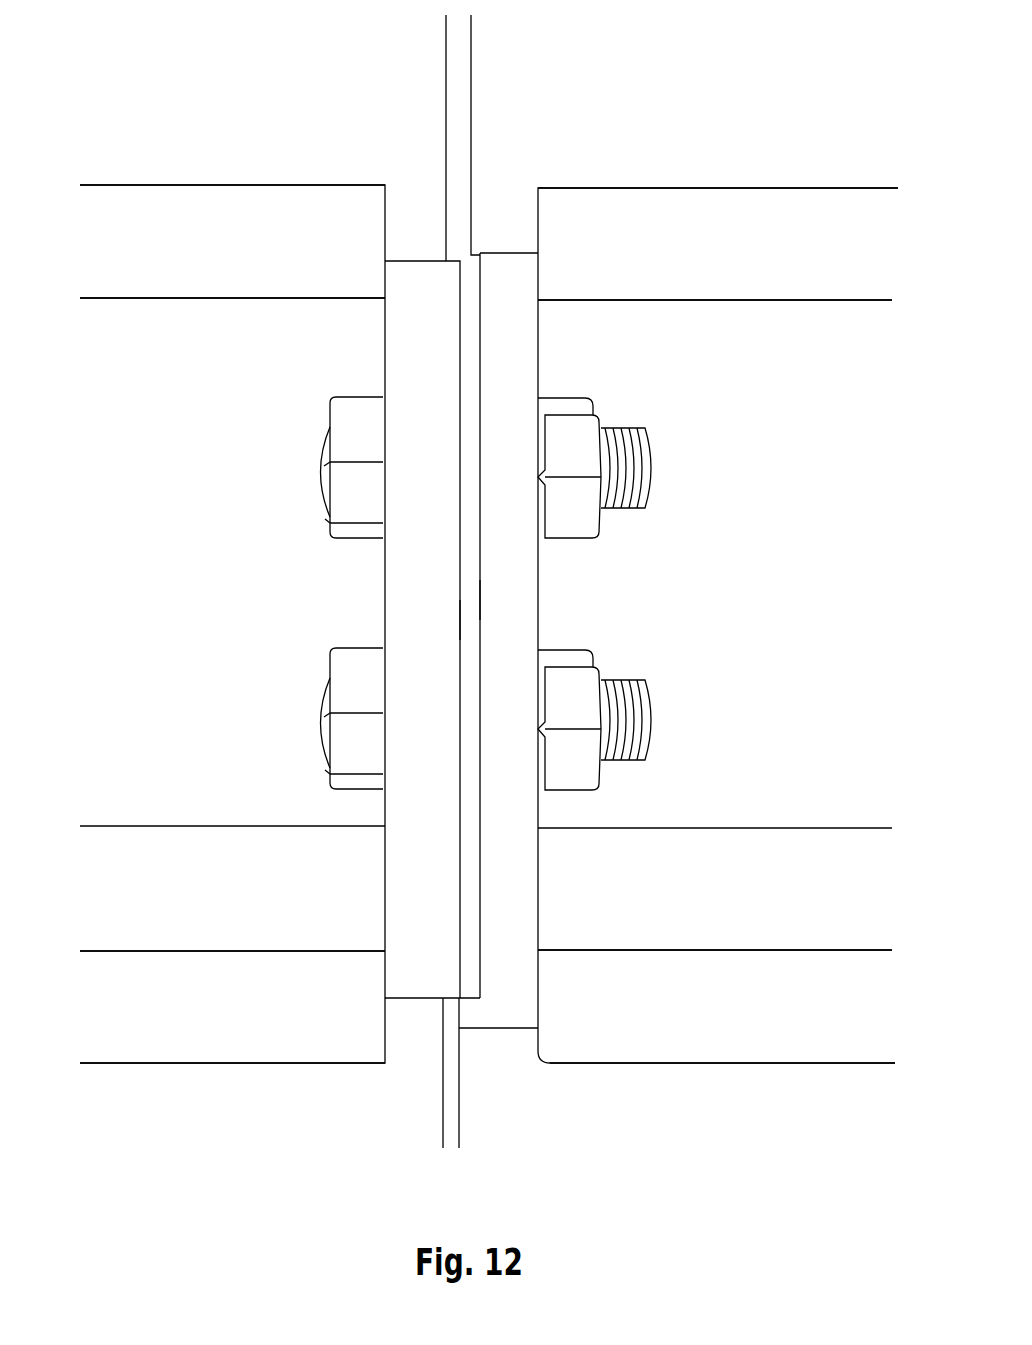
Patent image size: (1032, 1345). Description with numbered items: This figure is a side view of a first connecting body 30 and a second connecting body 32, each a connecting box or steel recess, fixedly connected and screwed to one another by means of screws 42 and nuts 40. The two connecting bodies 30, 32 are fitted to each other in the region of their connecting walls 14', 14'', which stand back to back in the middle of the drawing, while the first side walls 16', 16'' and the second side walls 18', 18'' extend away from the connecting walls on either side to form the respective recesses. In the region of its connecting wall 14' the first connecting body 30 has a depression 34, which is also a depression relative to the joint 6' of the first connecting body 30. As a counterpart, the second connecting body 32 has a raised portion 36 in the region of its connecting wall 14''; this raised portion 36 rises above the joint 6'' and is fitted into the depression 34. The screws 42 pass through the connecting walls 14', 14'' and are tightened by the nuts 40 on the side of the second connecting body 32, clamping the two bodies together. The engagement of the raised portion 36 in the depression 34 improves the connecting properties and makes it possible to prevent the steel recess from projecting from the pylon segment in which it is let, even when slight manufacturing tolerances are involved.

The joint 6' is at (409, 581).
The joint 6'' is at (517, 581).
The connecting wall 14' is at (498, 640).
The connecting wall 14'' is at (432, 629).
The first side wall 16' is at (715, 625).
The first side wall 16'' is at (232, 624).
The second side wall 18' is at (718, 625).
The second side wall 18'' is at (232, 624).
The first connecting body 30 is at (718, 625).
The second connecting body 32 is at (232, 624).
The depression 34 is at (484, 601).
The raised portion 36 is at (458, 617).
The nuts 40 is at (352, 593).
The screws 42 is at (594, 594).